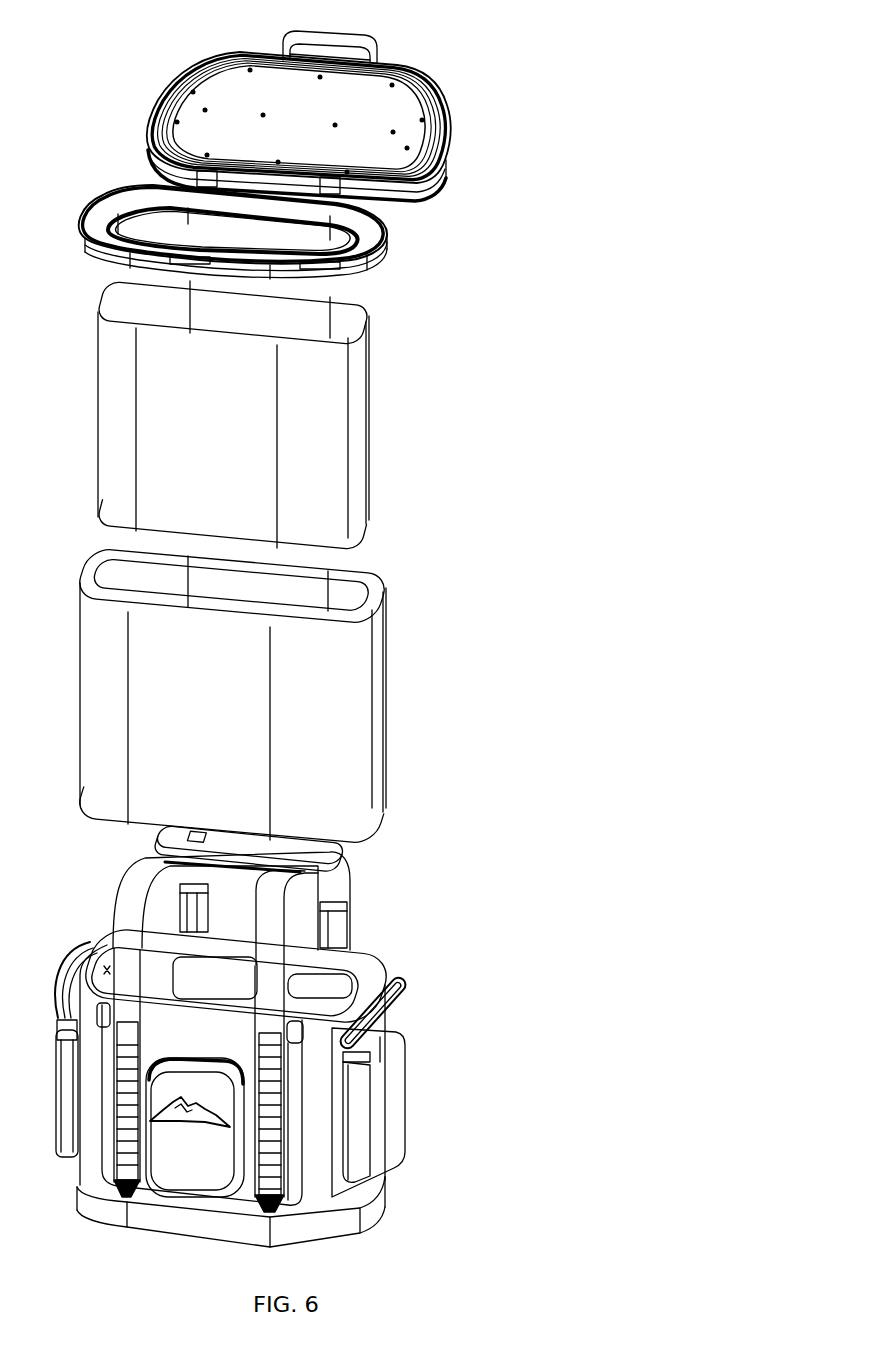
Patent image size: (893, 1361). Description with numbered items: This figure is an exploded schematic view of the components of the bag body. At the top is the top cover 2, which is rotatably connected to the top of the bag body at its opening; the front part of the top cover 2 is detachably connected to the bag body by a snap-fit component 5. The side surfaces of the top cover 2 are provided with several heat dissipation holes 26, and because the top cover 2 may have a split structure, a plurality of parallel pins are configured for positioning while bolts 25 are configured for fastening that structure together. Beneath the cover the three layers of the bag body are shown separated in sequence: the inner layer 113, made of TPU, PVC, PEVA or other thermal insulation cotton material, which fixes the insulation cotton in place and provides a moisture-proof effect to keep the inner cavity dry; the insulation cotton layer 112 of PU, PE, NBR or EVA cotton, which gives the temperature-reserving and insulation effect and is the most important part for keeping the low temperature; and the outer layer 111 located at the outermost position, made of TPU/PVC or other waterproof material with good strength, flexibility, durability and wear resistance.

The snap-fit component 5 is at (358, 50).
The top cover 2 is at (395, 113).
The bolt 25 is at (428, 160).
The heat dissipation holes 26 is at (402, 197).
The inner layer 113 is at (293, 420).
The insulation cotton layer 112 is at (328, 712).
The outer layer 111 is at (317, 1065).